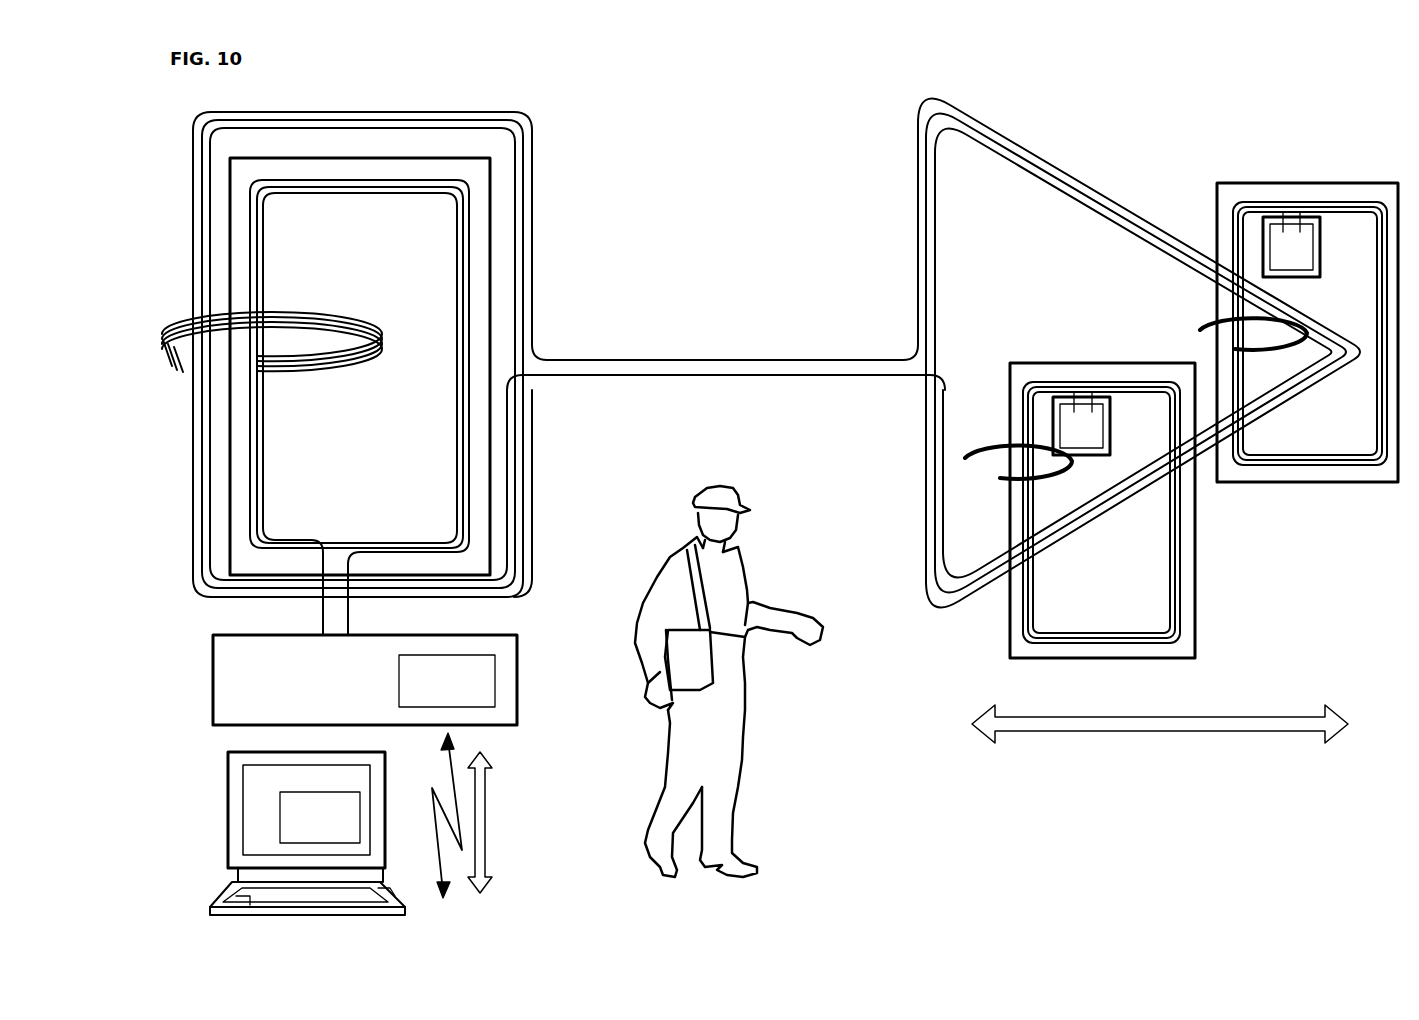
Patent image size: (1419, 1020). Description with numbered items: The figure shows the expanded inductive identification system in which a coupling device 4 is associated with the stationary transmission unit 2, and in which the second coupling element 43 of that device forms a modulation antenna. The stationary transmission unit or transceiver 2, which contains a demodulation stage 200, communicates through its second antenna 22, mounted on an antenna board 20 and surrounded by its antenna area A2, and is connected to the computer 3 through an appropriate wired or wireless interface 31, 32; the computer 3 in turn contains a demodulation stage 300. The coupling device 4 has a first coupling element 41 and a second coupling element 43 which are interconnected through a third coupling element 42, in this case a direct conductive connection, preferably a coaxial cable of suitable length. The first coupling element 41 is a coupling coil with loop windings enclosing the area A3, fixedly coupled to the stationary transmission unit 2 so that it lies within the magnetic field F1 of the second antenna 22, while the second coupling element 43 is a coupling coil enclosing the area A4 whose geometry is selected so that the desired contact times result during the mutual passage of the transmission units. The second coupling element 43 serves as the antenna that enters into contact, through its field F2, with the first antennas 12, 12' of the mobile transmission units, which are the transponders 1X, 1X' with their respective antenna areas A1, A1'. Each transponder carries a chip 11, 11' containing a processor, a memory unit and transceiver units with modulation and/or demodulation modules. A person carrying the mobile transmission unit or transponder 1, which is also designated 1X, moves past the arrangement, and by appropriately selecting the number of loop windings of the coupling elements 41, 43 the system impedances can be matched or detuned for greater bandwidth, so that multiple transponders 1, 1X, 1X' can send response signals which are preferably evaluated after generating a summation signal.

The coupling device 4 is at (788, 208).
The first coupling element 41 is at (528, 118).
The third coupling element 42 is at (788, 367).
The second coupling element 43 is at (970, 118).
The reader/writer antenna board 20 is at (332, 157).
The second antenna 22 is at (402, 177).
The stationary transmission unit 2 is at (365, 680).
The demodulation stage 200 is at (447, 681).
The computer 3 is at (307, 833).
The demodulation stage 300 is at (320, 817).
The interface 31 is at (492, 822).
The interface 32 is at (429, 815).
The mobile transmission unit 1 is at (683, 653).
The transponder 1X is at (1102, 468).
The transponder 1X' is at (1307, 289).
The chip 11 is at (1088, 387).
The IC chip 11' is at (1299, 208).
The first antenna 12 is at (1101, 481).
The tag antenna coil 12' is at (1315, 302).
The tag antenna area A1 is at (1130, 596).
The tag antenna area A1' is at (1345, 416).
The reader antenna area A2 is at (315, 224).
The first loop area A3 is at (275, 142).
The second loop area A4 is at (962, 179).
The magnetic field of reader antenna F1 is at (277, 336).
The magnetic field of loop antenna F2 is at (1136, 398).